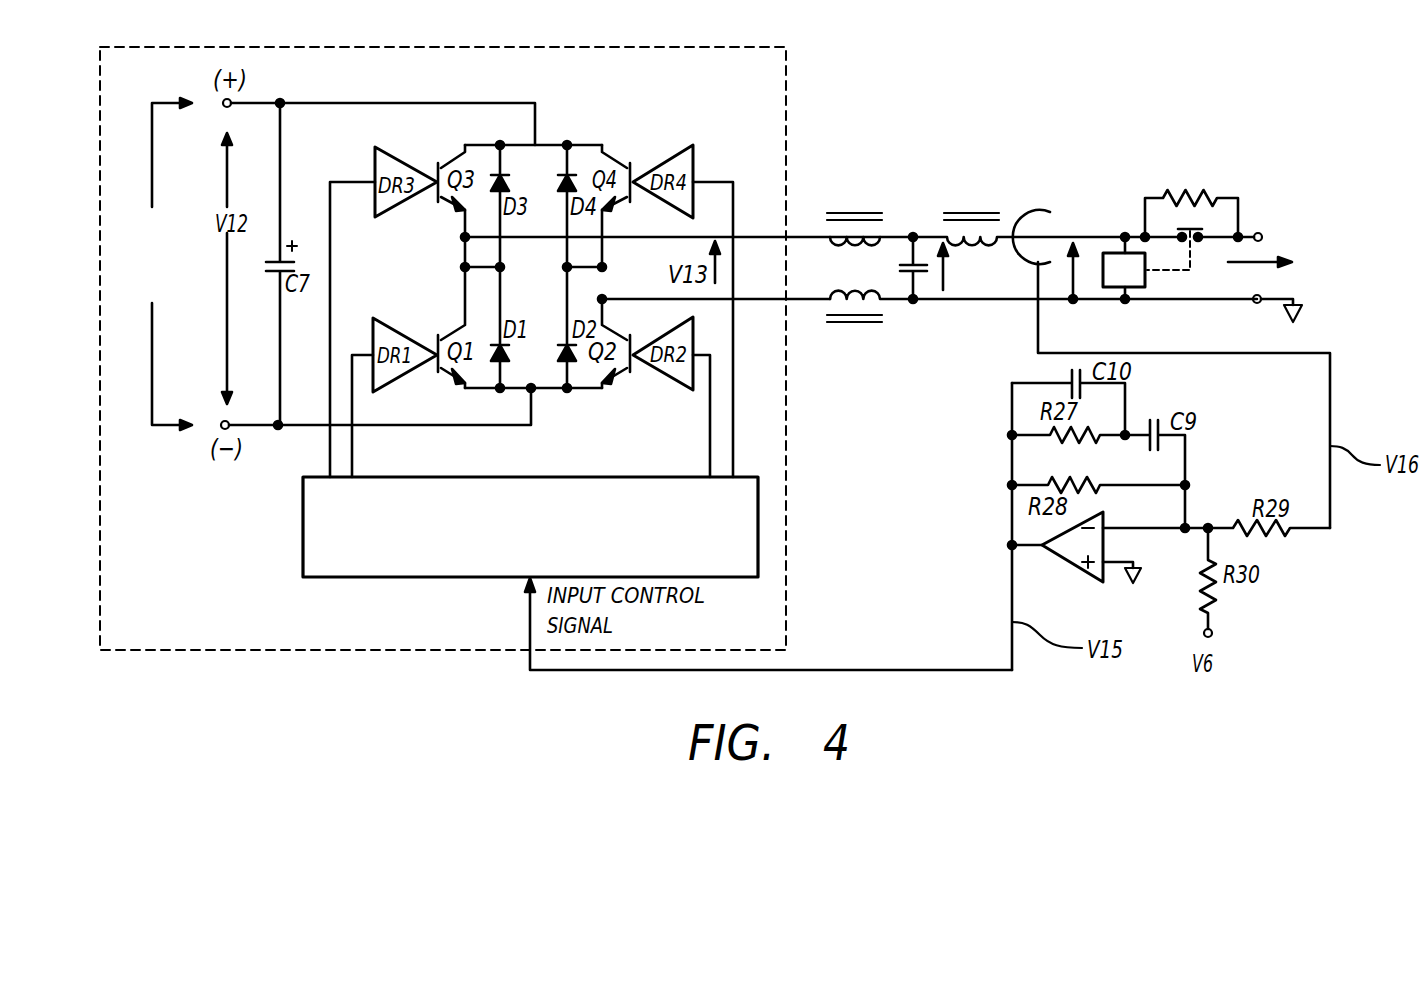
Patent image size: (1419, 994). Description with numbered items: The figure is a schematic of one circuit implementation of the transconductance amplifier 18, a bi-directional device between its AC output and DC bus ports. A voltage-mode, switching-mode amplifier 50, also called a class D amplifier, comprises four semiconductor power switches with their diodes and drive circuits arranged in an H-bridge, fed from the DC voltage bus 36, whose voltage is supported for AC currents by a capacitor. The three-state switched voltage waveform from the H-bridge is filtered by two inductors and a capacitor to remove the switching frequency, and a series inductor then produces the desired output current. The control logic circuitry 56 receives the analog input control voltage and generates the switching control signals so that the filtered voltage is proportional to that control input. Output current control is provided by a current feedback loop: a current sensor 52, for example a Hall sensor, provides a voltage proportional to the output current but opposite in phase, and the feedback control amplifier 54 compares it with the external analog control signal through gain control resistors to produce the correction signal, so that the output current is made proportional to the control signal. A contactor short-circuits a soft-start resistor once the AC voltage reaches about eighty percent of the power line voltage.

The transconductance amplifier 18 is at (1175, 126).
The DC voltage bus 36 is at (178, 106).
The voltage-mode, switching-mode amplifier 50 is at (788, 89).
The current sensor 52 is at (1047, 210).
The feedback control amplifier 54 is at (1072, 568).
The control logic circuitry 56 is at (303, 559).